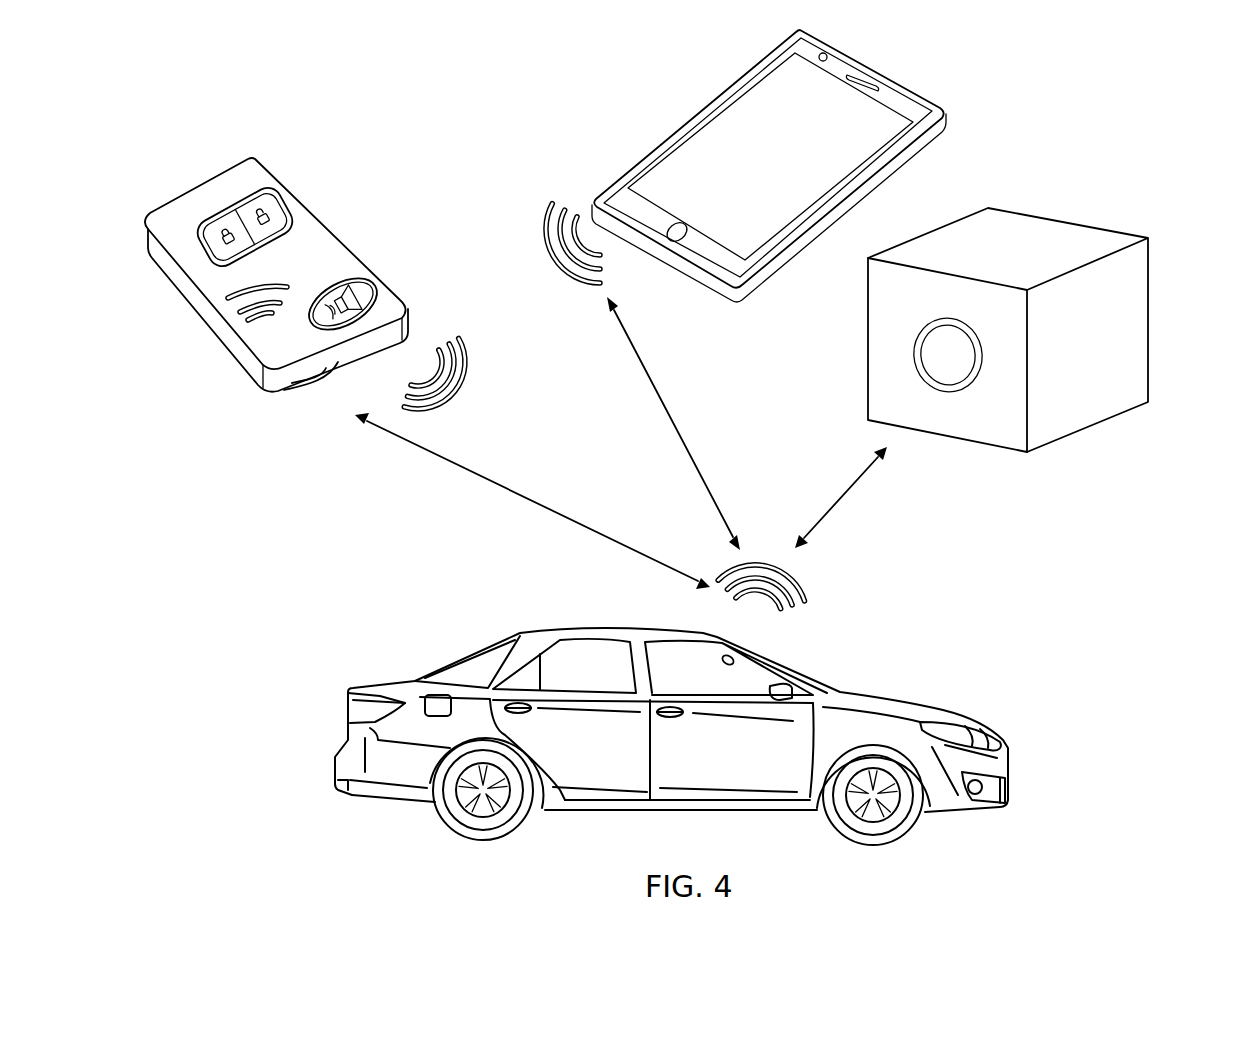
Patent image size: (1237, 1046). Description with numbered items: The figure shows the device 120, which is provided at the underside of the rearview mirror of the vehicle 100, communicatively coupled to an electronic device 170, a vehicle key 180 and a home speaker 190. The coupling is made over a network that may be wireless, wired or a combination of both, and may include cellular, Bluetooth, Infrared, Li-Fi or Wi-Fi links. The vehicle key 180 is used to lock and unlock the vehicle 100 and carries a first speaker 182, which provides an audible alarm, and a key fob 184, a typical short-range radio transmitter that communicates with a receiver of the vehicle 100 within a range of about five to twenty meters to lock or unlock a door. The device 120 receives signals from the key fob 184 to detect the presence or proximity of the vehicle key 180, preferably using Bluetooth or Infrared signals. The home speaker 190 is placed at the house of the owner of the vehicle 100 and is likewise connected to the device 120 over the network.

The vehicle 100 is at (890, 722).
The device 120 is at (756, 653).
The electronic device 170 is at (718, 138).
The vehicle key 180 is at (328, 240).
The first speaker 182 is at (355, 297).
The key fob 184 is at (255, 302).
The home speaker 190 is at (1023, 237).